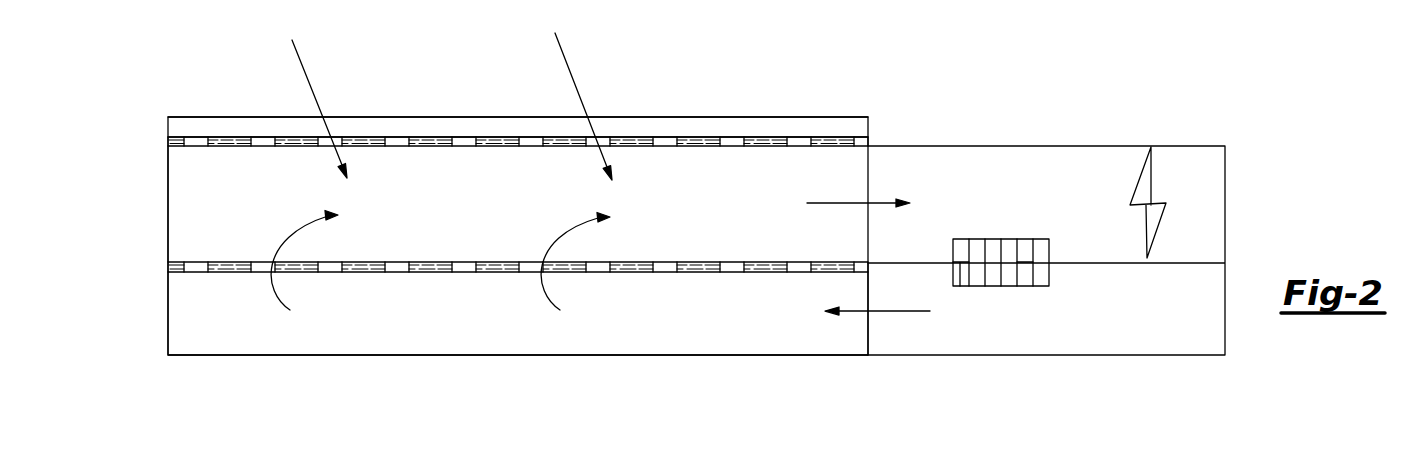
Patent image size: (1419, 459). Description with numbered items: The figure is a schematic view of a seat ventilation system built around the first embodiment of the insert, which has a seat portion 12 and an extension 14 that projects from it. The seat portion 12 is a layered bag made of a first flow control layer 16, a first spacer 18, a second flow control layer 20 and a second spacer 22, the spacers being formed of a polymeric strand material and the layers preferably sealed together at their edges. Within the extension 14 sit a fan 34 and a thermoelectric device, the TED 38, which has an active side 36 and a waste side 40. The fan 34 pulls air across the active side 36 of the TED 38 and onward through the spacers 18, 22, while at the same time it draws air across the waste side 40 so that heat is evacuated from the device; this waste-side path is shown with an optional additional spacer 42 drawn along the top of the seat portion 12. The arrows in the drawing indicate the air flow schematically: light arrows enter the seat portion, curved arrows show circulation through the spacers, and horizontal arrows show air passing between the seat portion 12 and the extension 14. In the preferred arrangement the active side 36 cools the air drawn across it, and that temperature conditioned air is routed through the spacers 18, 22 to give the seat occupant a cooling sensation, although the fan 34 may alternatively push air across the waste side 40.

The seat portion 12 is at (867, 93).
The extension 14 is at (1218, 390).
The first flow control layer 16 is at (178, 142).
The first spacer 18 is at (178, 217).
The second flow control layer 20 is at (178, 266).
The second spacer 22 is at (178, 322).
The fan 34 is at (1151, 147).
The active side 36 is at (960, 286).
The TED 38 is at (1023, 286).
The waste side 40 is at (978, 239).
The additional spacer 42 is at (174, 125).